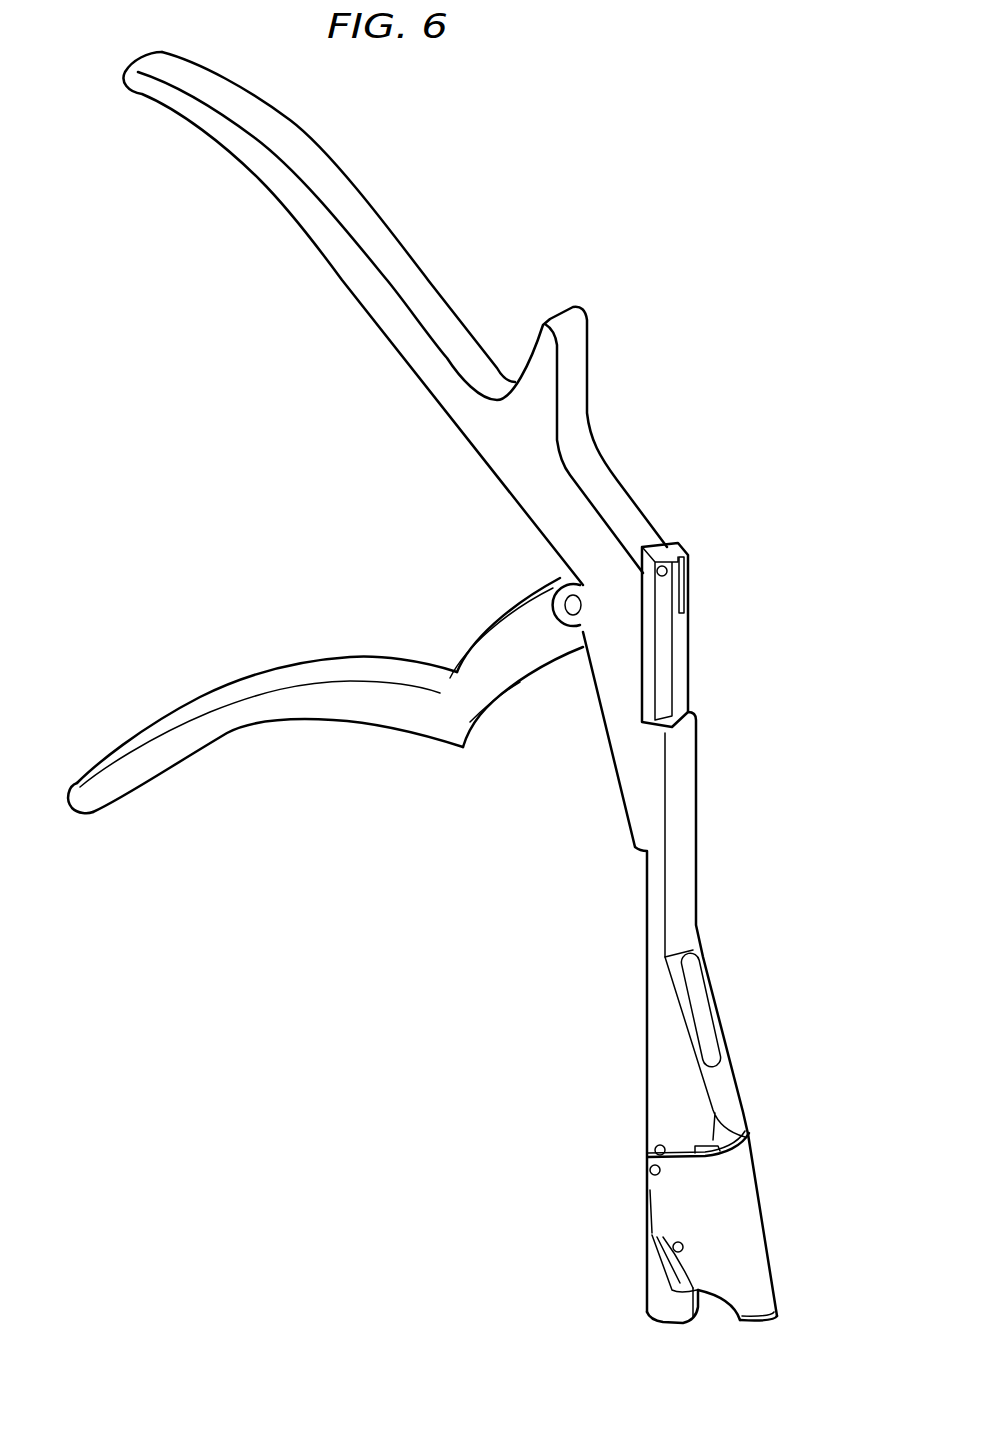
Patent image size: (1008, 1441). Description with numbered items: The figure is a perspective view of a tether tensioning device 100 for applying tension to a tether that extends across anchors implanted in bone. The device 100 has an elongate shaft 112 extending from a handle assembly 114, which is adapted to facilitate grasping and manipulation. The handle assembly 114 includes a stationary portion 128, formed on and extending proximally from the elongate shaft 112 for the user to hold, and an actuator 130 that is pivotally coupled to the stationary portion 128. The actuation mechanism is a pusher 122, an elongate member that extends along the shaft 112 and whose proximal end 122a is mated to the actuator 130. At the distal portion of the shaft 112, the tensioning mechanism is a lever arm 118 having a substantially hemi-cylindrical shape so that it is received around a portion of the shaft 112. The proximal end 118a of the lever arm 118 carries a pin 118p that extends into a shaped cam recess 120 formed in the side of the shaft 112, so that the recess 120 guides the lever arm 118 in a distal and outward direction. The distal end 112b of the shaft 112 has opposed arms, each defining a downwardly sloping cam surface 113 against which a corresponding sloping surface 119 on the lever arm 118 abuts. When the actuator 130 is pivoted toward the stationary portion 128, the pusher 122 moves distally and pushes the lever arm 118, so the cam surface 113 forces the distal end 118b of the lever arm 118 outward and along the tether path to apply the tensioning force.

The tether tensioning device 100 is at (601, 131).
The handle assembly 114 is at (274, 493).
The stationary portion 128 is at (368, 200).
The actuator 130 is at (213, 740).
The pusher 122 is at (683, 640).
The proximal end of the pusher 122a is at (691, 532).
The elongate shaft 112 is at (698, 903).
The distal end of the elongate shaft 112b is at (628, 1306).
The cam surface 113 is at (678, 1287).
The lever arm 118 is at (767, 1223).
The proximal end of the lever arm 118a is at (778, 1133).
The distal end of the lever arm 118b is at (791, 1327).
The pin 118p is at (650, 1172).
The downwardly sloping surface 119 is at (712, 1287).
The cam recess 120 is at (654, 1150).